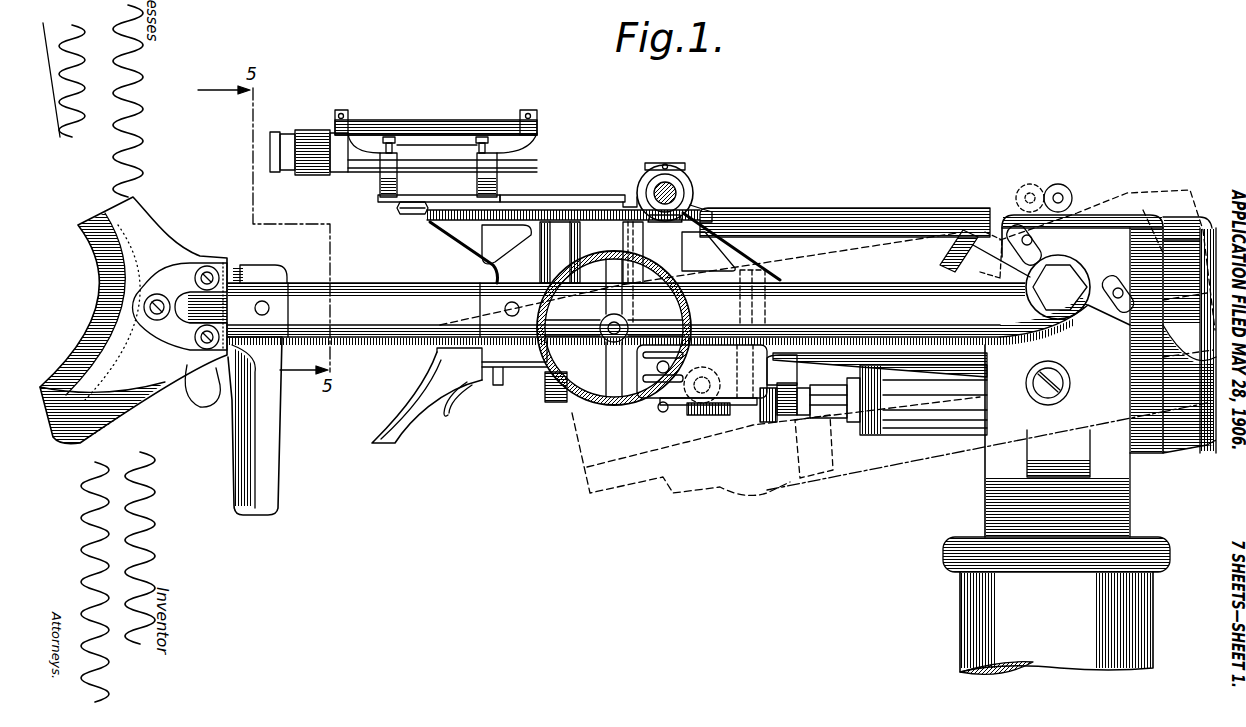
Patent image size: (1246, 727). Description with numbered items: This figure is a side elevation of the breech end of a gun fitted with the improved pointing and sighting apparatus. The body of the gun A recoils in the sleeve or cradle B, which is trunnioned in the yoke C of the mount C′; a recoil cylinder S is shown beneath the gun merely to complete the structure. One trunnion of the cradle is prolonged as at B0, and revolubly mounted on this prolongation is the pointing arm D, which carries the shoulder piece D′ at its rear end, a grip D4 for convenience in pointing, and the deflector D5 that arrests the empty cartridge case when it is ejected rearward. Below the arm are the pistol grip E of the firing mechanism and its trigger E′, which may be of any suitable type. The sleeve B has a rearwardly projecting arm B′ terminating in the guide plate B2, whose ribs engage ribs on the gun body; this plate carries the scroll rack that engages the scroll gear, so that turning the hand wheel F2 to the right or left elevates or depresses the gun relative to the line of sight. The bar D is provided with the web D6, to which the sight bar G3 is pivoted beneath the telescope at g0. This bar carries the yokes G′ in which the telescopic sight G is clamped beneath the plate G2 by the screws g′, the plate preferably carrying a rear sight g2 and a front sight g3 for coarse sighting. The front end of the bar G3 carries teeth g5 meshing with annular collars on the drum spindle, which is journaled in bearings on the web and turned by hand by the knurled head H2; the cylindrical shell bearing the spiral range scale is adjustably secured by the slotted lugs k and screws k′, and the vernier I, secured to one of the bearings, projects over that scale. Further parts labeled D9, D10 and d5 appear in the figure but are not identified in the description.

The shoulder piece D′ is at (100, 303).
The grip D4 is at (193, 400).
The deflector D5 is at (263, 437).
The pointing arm D is at (679, 305).
The web D6 is at (483, 243).
The hidden frame line D9 is at (777, 268).
The frame lug D10 is at (713, 192).
The pistol grip E is at (397, 423).
The trigger E′ is at (458, 395).
The guide plate B2 is at (518, 350).
The hand wheel F2 is at (622, 400).
The body of the gun A is at (852, 230).
The telescopic sight G is at (307, 135).
The yokes G′ is at (388, 165).
The plate G2 is at (433, 132).
The bar G3 is at (590, 195).
The screws g′ is at (390, 137).
The rear sight g2 is at (343, 113).
The front sight g3 is at (535, 120).
The teeth g5 is at (623, 197).
The pivot g0 is at (410, 214).
The vernier I is at (673, 163).
The knurled head H2 is at (690, 180).
The screws k′ is at (684, 168).
The slotted lugs k is at (690, 194).
The adjusting screw d5 is at (633, 190).
The sleeve or cradle B is at (1077, 227).
The prolonged trunnion B0 is at (1072, 288).
The rearwardly projecting arm B′ is at (916, 383).
The recoil cylinder S is at (940, 427).
The yoke C is at (1057, 441).
The mount C′ is at (1056, 605).